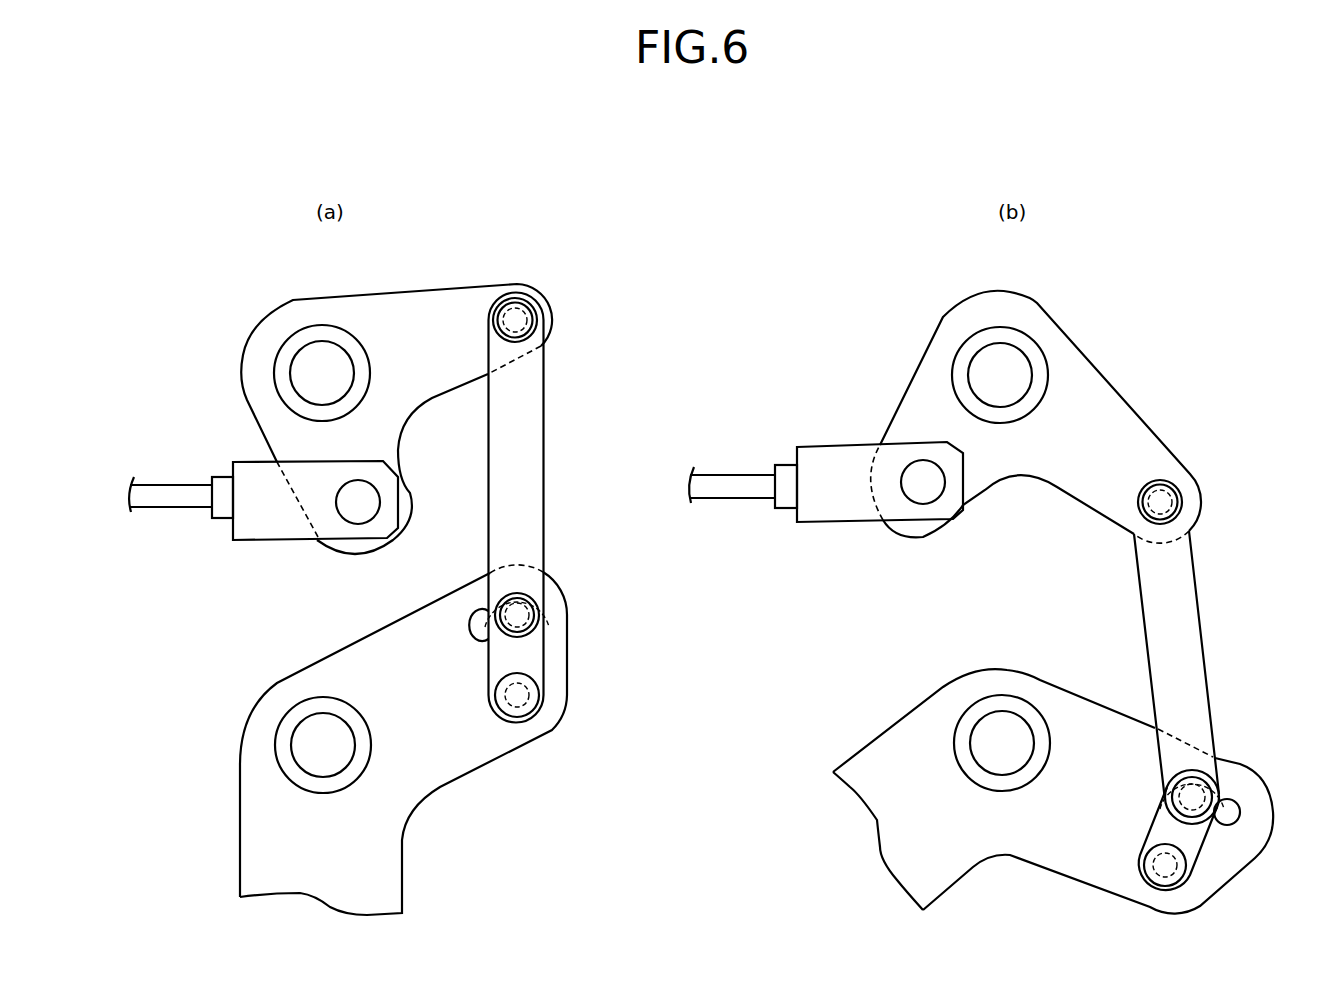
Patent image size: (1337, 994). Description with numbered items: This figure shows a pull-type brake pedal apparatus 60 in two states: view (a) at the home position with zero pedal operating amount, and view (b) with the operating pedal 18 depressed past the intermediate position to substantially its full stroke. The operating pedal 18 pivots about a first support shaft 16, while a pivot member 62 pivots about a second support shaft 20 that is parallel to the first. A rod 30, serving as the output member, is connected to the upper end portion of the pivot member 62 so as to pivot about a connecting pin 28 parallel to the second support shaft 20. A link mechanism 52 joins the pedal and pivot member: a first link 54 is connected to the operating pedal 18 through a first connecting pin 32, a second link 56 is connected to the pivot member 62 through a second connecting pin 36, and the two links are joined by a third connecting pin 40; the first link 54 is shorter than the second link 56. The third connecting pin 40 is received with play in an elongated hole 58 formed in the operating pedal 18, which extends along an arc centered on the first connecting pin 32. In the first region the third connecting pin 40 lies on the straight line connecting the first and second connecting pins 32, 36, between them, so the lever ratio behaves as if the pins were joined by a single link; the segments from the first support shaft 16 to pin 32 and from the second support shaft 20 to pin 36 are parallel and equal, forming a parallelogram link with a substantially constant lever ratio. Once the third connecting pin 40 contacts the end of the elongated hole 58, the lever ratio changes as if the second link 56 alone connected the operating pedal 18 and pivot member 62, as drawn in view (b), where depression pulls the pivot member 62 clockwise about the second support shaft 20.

The first support shaft 16 is at (308, 732).
The operating pedal 18 is at (388, 897).
The second support shaft 20 is at (310, 362).
The connecting pin 28 is at (360, 513).
The rod 30 is at (159, 497).
The first connecting pin 32 is at (518, 700).
The second connecting pin 36 is at (517, 323).
The third connecting pin 40 is at (517, 615).
The link mechanism 52 is at (602, 485).
The first link 54 is at (532, 657).
The second link 56 is at (530, 443).
The elongated hole 58 is at (462, 630).
The brake pedal apparatus 60 is at (562, 270).
The pivot member 62 is at (393, 306).